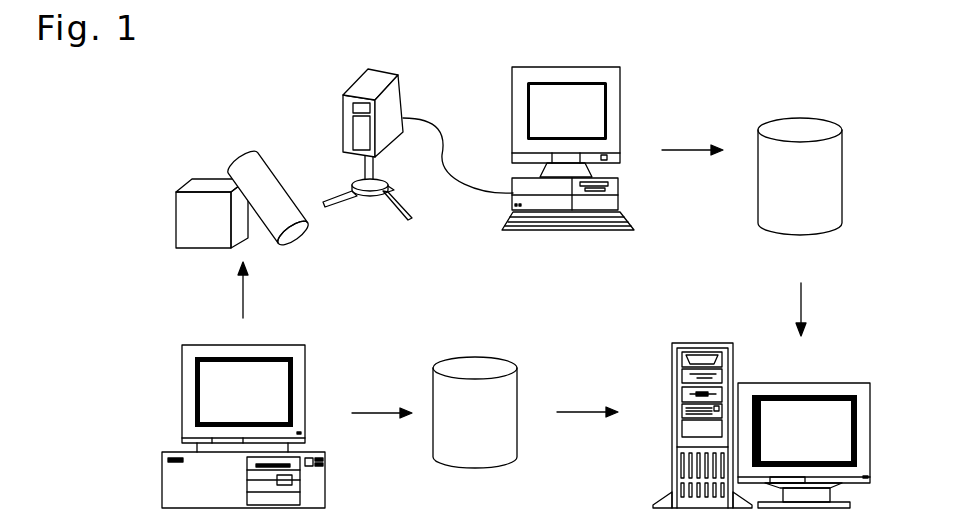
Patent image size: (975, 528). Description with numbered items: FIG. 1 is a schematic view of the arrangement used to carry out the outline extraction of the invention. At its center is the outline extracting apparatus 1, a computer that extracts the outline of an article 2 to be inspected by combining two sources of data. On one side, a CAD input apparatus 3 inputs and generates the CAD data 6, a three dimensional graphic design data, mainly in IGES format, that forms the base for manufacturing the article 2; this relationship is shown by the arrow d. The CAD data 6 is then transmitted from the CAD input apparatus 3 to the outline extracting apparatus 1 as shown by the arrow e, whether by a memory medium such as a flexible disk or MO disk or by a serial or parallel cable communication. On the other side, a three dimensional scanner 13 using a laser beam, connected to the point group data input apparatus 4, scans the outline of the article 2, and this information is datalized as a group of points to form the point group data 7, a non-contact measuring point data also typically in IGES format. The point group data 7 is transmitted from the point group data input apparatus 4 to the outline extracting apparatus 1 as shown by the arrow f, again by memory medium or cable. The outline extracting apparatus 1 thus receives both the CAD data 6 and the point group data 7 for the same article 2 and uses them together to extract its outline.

The outline extracting apparatus 1 is at (870, 432).
The article to be inspected 2 is at (270, 160).
The CAD input apparatus 3 is at (305, 360).
The point group data input apparatus 4 is at (620, 113).
The CAD data 6 is at (472, 355).
The point group data 7 is at (798, 118).
The three dimensional scanner 13 is at (402, 87).
The arrow d is at (243, 287).
The arrow e is at (380, 413).
The arrow f is at (692, 150).